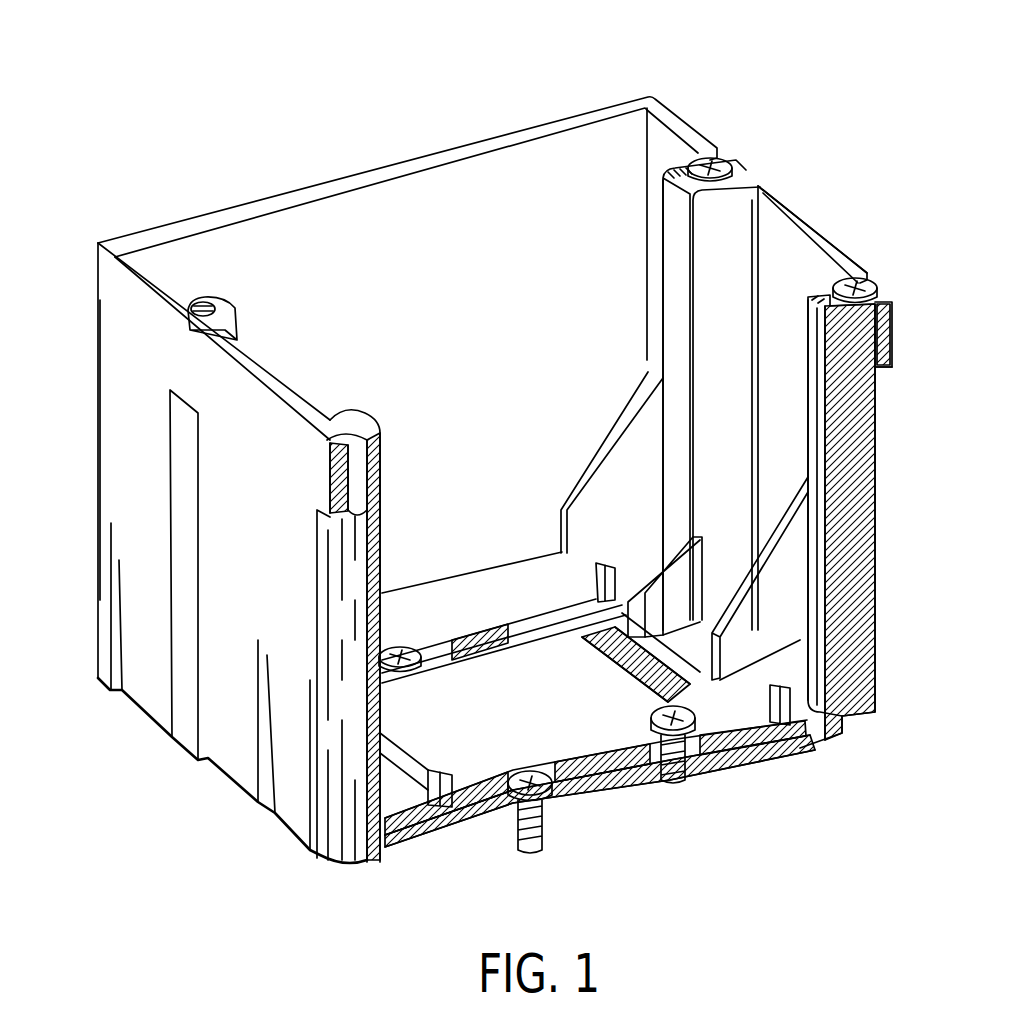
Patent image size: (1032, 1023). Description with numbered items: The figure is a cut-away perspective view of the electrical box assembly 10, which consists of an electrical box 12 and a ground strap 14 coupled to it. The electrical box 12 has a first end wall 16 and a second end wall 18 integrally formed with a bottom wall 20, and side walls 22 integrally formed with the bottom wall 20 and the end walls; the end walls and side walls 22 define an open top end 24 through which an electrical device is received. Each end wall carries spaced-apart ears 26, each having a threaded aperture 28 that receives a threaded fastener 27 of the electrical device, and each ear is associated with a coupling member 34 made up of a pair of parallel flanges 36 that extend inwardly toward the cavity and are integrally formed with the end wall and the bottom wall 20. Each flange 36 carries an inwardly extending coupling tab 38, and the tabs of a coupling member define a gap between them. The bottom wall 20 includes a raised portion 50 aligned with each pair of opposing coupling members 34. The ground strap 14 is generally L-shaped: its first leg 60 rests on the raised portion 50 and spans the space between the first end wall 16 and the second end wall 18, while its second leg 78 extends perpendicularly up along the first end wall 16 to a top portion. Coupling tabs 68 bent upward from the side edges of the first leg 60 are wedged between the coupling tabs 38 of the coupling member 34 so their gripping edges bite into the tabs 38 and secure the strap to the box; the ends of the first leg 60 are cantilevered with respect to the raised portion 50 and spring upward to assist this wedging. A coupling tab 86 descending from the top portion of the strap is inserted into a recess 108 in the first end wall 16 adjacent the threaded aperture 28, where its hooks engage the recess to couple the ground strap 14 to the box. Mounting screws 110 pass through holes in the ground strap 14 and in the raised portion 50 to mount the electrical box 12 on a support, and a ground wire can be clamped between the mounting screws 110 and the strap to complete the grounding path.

The electrical box assembly 10 is at (523, 92).
The electrical box 12 is at (800, 200).
The ground strap 14 is at (660, 218).
The first end wall 16 is at (830, 240).
The second end wall 18 is at (262, 378).
The bottom wall 20 is at (527, 742).
The side walls 22 is at (390, 200).
The open top end 24 is at (307, 213).
The ears 26 is at (240, 300).
The threaded fastener 27 is at (695, 152).
The threaded aperture 28 is at (205, 305).
The coupling member 34 is at (590, 565).
The flanges 36 is at (640, 545).
The coupling tab 38 is at (596, 590).
The raised portion 50 is at (510, 822).
The first leg 60 is at (597, 770).
The coupling tabs 68 is at (605, 600).
The second leg 78 is at (810, 417).
The coupling tab 86 is at (888, 322).
The recess 108 is at (892, 365).
The mounting screws 110 is at (665, 702).